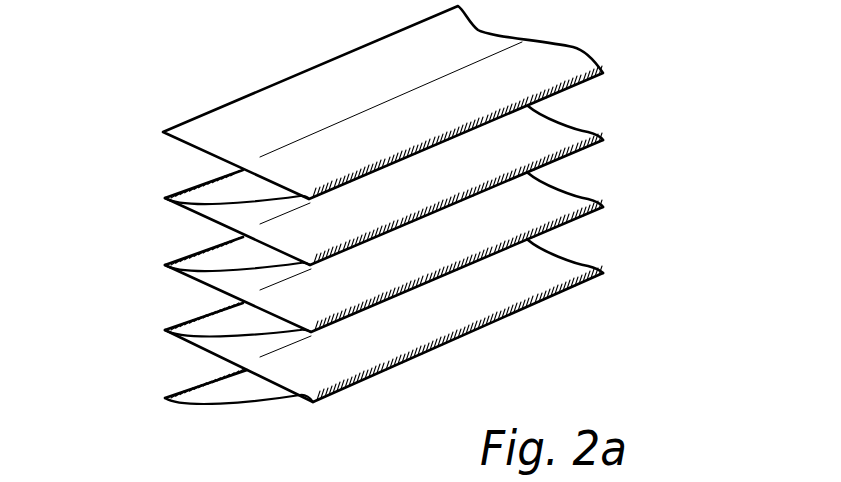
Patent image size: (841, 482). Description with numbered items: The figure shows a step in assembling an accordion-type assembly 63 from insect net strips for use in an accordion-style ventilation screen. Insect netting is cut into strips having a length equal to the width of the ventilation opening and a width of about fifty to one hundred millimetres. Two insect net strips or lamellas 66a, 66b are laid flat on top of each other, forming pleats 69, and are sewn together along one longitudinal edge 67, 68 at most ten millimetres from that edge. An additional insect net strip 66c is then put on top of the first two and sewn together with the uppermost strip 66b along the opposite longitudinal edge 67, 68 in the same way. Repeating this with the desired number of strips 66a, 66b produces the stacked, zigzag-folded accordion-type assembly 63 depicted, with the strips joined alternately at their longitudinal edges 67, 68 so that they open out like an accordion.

The accordion-type assembly 63 is at (403, 242).
The pleats 69 is at (153, 168).
The insect net strip 66a is at (222, 401).
The insect net strip 66b is at (491, 292).
The insect net strip 66c is at (201, 322).
The longitudinal edge 67 is at (155, 375).
The longitudinal edge 68 is at (374, 388).